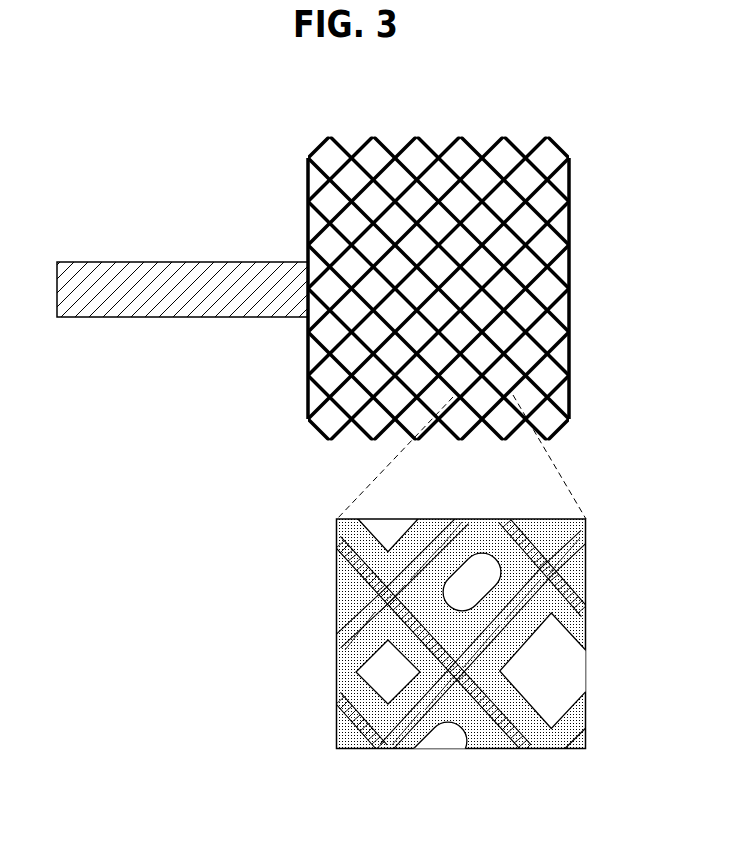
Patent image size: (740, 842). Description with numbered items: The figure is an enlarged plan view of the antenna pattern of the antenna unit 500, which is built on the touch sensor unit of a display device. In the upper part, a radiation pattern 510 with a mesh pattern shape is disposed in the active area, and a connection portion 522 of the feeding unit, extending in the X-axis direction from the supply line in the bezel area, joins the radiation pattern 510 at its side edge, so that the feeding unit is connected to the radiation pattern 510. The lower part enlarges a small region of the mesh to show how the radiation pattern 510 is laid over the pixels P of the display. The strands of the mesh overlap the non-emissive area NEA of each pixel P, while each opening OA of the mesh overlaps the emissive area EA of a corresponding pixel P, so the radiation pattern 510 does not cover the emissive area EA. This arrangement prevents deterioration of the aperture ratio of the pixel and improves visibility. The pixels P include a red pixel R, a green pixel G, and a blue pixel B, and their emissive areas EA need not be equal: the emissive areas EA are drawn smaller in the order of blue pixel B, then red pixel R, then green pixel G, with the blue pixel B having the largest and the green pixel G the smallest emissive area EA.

The antenna unit 500 is at (238, 167).
The connection portion 522 is at (175, 262).
The radiation pattern 510 is at (308, 218).
The pixel P is at (500, 519).
The opening OA is at (348, 598).
The non-emissive area NEA is at (355, 657).
The emissive area EA is at (356, 672).
The red pixel R is at (388, 672).
The green pixel G is at (455, 666).
The blue pixel B is at (552, 671).